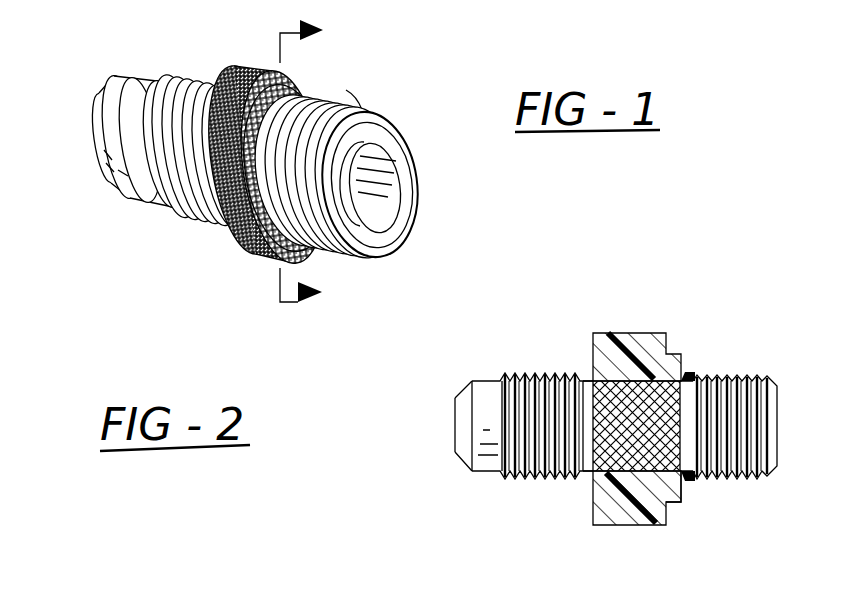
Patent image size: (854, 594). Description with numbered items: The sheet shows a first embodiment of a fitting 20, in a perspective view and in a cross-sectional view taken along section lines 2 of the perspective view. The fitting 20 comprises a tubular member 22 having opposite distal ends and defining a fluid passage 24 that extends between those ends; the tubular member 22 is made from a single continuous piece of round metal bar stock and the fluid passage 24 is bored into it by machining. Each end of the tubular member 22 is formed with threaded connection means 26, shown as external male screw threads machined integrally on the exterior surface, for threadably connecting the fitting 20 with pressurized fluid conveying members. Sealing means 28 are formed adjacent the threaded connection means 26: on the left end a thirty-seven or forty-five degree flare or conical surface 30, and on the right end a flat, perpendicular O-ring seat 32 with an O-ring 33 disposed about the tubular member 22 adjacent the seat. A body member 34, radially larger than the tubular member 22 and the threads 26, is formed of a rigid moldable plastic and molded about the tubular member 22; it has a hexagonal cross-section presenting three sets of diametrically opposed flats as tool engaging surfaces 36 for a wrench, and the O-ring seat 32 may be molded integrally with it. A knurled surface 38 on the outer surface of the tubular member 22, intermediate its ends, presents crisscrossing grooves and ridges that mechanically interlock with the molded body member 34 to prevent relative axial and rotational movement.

In FIG. 1, the section lines 2— 2 is at (310, 151).
In FIG. 1, the fitting 20 is at (252, 149).
In FIG. 2, the fitting 20 is at (589, 425).
In FIG. 1, the tubular member 22 is at (407, 180).
In FIG. 2, the tubular member 22 is at (590, 478).
In FIG. 1, the fluid passage 24 is at (374, 220).
In FIG. 1, the threaded connection means 26 is at (166, 212).
In FIG. 2, the threaded connection means 26 is at (525, 479).
In FIG. 1, the sealing means 28 is at (95, 158).
In FIG. 2, the sealing means 28 is at (454, 460).
In FIG. 1, the conical surface 30 is at (111, 141).
In FIG. 2, the conical surface 30 is at (444, 431).
In FIG. 1, the O-ring seat 32 is at (343, 80).
In FIG. 2, the O-ring seat 32 is at (687, 371).
In FIG. 1, the O-ring 33 is at (360, 102).
In FIG. 2, the O-ring 33 is at (693, 481).
In FIG. 1, the body member 34 is at (246, 72).
In FIG. 2, the body member 34 is at (592, 375).
In FIG. 1, the tool engaging surfaces 36 is at (298, 163).
In FIG. 2, the tool engaging surfaces 36 is at (650, 425).
In FIG. 2, the knurled surface 38 is at (677, 503).